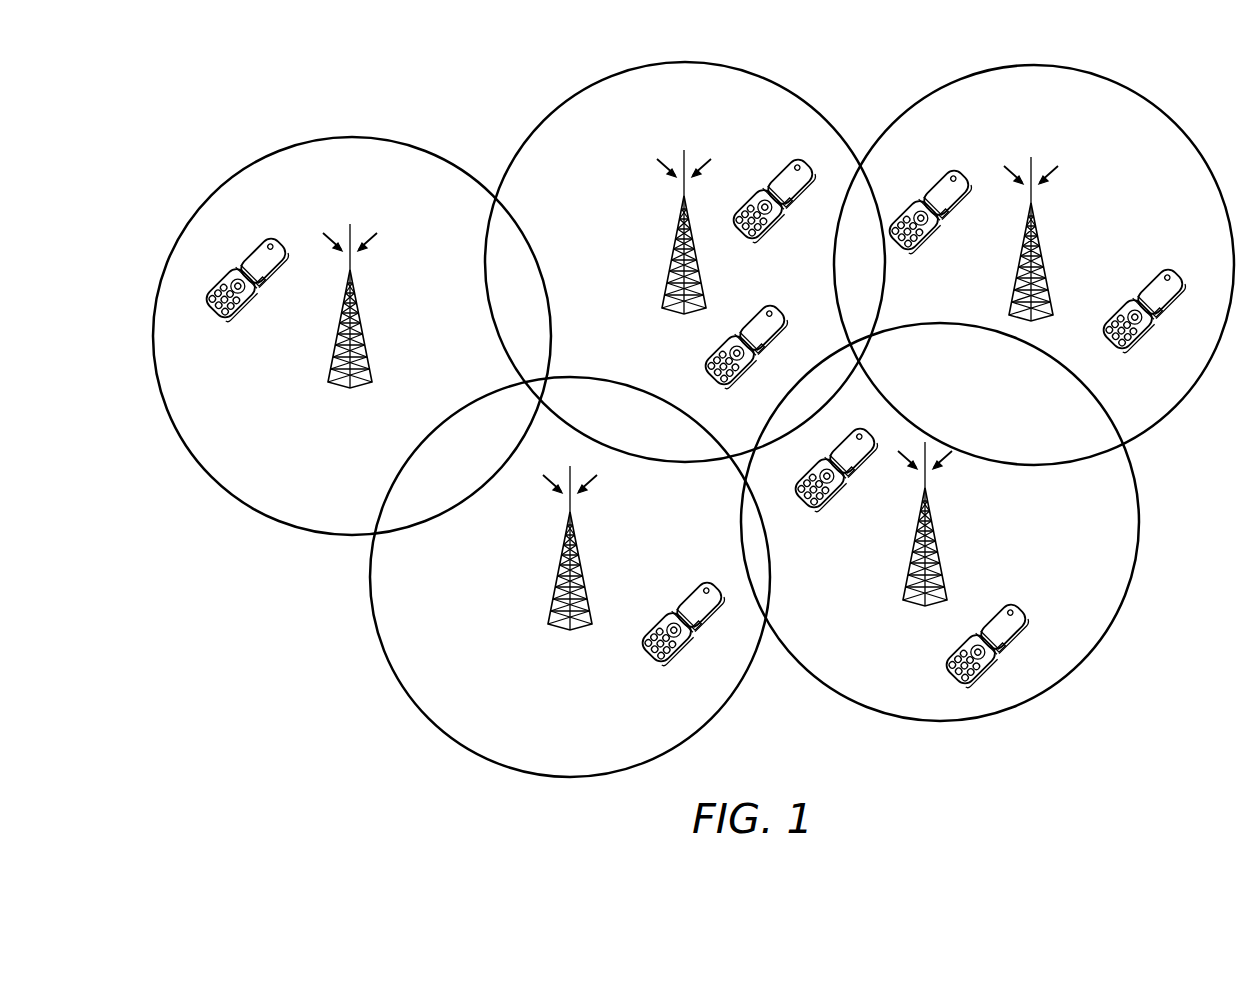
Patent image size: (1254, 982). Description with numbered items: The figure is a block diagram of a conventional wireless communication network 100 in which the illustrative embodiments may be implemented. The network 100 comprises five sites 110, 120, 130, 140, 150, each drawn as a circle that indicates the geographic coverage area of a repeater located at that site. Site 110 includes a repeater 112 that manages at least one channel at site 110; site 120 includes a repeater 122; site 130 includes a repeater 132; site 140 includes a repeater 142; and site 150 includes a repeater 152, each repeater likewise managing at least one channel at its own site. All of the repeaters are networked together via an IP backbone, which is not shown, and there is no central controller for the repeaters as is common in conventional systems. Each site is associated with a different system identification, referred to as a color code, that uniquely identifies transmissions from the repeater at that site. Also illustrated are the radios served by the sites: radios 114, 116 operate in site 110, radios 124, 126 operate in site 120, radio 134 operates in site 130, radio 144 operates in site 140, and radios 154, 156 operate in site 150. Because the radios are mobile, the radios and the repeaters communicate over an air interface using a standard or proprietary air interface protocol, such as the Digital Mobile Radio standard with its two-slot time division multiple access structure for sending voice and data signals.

The wireless communication network 100 is at (200, 92).
The site 110 is at (683, 62).
The repeater 112 is at (672, 236).
The radio 114 is at (783, 167).
The radio 116 is at (759, 312).
The site 120 is at (1132, 87).
The repeater 122 is at (1038, 232).
The radio 124 is at (948, 175).
The radio 126 is at (1130, 305).
The site 130 is at (350, 137).
The repeater 132 is at (358, 297).
The radio 134 is at (250, 305).
The site 140 is at (371, 626).
The repeater 142 is at (578, 540).
The radio 144 is at (668, 622).
The site 150 is at (1139, 522).
The repeater 152 is at (935, 515).
The radio 154 is at (832, 496).
The radio 156 is at (965, 640).